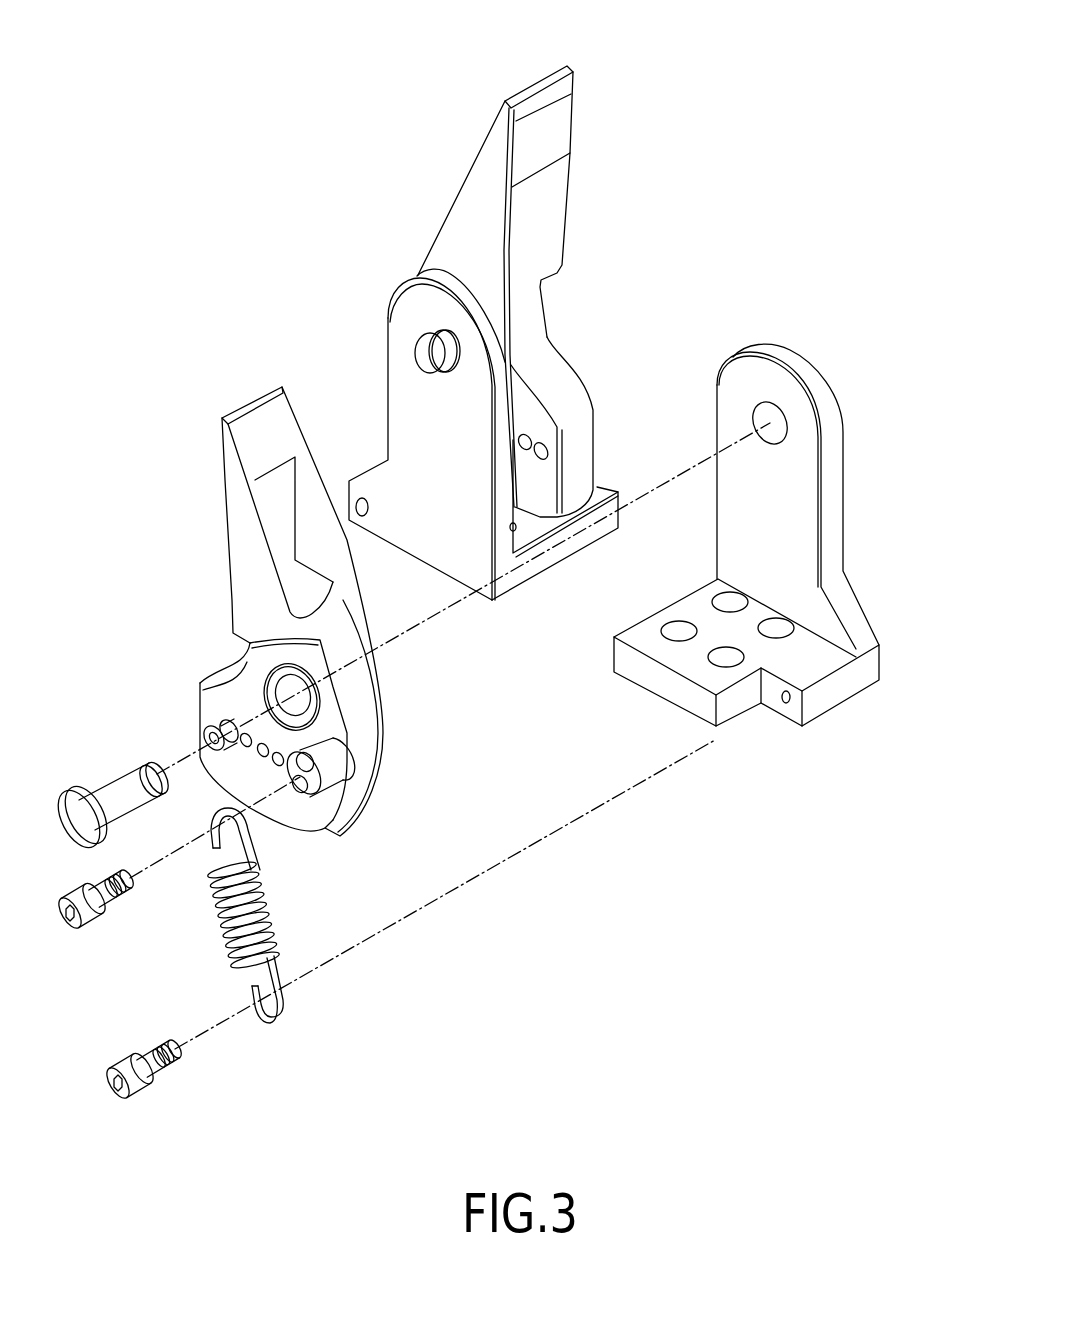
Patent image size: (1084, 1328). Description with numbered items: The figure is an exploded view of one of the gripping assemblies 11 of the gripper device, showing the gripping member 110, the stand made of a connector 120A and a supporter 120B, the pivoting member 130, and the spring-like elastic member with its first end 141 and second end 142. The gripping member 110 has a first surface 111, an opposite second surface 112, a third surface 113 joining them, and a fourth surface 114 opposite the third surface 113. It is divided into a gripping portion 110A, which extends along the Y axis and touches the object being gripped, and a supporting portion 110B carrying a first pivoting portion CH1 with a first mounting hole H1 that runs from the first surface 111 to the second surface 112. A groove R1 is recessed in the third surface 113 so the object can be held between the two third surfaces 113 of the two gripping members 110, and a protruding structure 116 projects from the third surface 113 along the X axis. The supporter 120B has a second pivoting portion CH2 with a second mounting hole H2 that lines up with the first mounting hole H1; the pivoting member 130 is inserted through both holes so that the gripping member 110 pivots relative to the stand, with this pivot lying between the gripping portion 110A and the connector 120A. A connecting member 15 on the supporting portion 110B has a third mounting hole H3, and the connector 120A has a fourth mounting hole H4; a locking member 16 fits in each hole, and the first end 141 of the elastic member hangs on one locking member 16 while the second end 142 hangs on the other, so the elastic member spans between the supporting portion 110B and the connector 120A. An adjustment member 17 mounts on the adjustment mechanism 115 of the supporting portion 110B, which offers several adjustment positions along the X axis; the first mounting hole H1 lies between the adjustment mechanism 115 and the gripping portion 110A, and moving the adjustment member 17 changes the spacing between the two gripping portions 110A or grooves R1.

The gripping assembly 11 is at (581, 71).
The gripping member 110 is at (468, 232).
The first surface 111 is at (488, 140).
The groove R1 is at (553, 130).
The third surface 113 is at (545, 223).
The supporting portion 110B is at (543, 387).
The adjustment mechanism 115 is at (545, 443).
The protruding structure 116 is at (580, 457).
The gripping portion 110A is at (240, 525).
The second surface 112 is at (250, 580).
The fourth surface 114 is at (267, 430).
The first pivoting portion CH1 is at (245, 660).
The first mounting hole H1 is at (288, 690).
The third mounting hole H3 is at (307, 800).
The connecting member 15 is at (327, 758).
The adjustment member 17 is at (213, 740).
The pivoting member 130 is at (107, 792).
The supporter 120B is at (403, 327).
The second pivoting portion CH2 is at (787, 420).
The second mounting hole H2 is at (757, 408).
The connector 120A is at (691, 610).
The fourth mounting hole H4 is at (786, 707).
The first end 141 is at (237, 848).
The second end 142 is at (283, 1020).
The locking member 16 is at (90, 920).